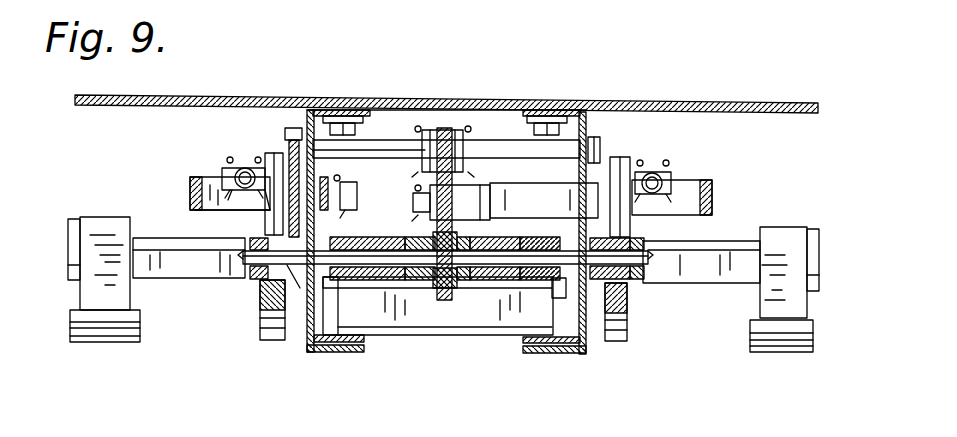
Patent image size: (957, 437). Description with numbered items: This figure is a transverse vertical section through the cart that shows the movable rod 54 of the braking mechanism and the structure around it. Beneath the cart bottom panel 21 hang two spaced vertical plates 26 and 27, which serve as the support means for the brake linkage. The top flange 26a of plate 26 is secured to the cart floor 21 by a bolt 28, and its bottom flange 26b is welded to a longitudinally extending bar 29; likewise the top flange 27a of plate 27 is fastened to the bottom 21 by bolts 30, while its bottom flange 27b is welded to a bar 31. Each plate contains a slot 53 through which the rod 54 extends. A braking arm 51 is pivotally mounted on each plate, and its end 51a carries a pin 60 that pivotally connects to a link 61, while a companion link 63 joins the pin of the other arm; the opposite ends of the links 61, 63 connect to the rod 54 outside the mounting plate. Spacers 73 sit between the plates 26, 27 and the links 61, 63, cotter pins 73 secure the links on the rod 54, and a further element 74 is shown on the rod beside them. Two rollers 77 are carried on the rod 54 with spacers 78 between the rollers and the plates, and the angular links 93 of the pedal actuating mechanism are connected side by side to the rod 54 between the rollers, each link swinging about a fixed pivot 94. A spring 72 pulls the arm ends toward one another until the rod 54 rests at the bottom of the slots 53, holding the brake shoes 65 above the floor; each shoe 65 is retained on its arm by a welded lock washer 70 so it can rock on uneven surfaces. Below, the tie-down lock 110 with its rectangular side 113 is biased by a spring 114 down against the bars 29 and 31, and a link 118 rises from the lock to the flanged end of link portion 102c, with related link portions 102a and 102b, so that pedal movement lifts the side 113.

The bottom panel 21 is at (700, 108).
The vertical plate 26 is at (586, 342).
The top flange 26a is at (555, 108).
The bottom flange 26b is at (560, 345).
The vertical plate 27 is at (303, 334).
The top flange 27a is at (338, 108).
The bottom flange 27b is at (352, 344).
The bolt 28 is at (534, 128).
The bar 29 is at (530, 354).
The bolt 30 is at (364, 121).
The bar 31 is at (325, 353).
The braking arm 51 is at (268, 222).
The end of arm 51a is at (191, 280).
The slot 53 is at (292, 148).
The rod 54 is at (240, 265).
The pin 60 is at (224, 168).
The link 61 is at (292, 197).
The link 63 is at (263, 287).
The brake shoe 65 is at (100, 345).
The lock washer 70 is at (68, 258).
The spring 72 is at (244, 165).
The spacer 73 is at (262, 315).
The washer 74 is at (252, 240).
The roller 77 is at (408, 237).
The spacer 78 is at (355, 212).
The angular link 93 is at (449, 128).
The fixed pivot 94 is at (388, 160).
The shaft 102a is at (487, 190).
The shaft 102b is at (189, 190).
The link portion 102c is at (213, 211).
The tie-down lock 110 is at (414, 337).
The rectangular side 113 is at (455, 322).
The spring 114 is at (555, 296).
The link 118 is at (338, 290).